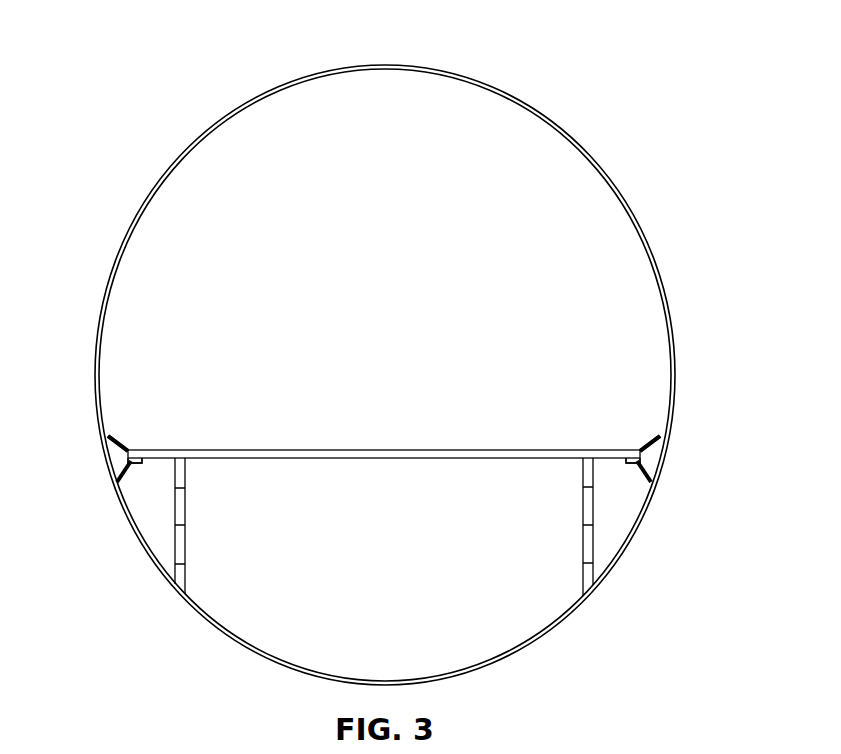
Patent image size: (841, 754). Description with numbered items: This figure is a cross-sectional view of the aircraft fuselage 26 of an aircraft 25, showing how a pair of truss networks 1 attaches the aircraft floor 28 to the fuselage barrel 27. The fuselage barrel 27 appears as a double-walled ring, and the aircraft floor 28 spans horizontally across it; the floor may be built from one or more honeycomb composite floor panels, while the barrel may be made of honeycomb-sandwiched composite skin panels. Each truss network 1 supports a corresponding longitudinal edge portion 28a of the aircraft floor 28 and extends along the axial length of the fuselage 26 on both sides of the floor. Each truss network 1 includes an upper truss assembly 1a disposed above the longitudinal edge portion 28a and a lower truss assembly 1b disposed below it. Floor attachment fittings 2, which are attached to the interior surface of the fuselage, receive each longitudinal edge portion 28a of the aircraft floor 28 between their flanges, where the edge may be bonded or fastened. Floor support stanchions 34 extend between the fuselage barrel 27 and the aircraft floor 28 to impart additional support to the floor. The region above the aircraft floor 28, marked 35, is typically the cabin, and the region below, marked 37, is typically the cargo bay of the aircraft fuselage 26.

The aircraft 25 is at (253, 71).
The aircraft fuselage 26 is at (576, 133).
The fuselage barrel 27 is at (629, 196).
The aircraft floor 28 is at (448, 450).
The longitudinal edge portion 28a is at (142, 462).
The truss network 1 is at (145, 403).
The upper truss assembly 1a is at (134, 438).
The lower truss assembly 1b is at (152, 473).
The floor attachment fitting 2 is at (126, 453).
The floor support stanchion 34 is at (186, 540).
The upper chamber 35 is at (395, 350).
The lower chamber 37 is at (395, 585).